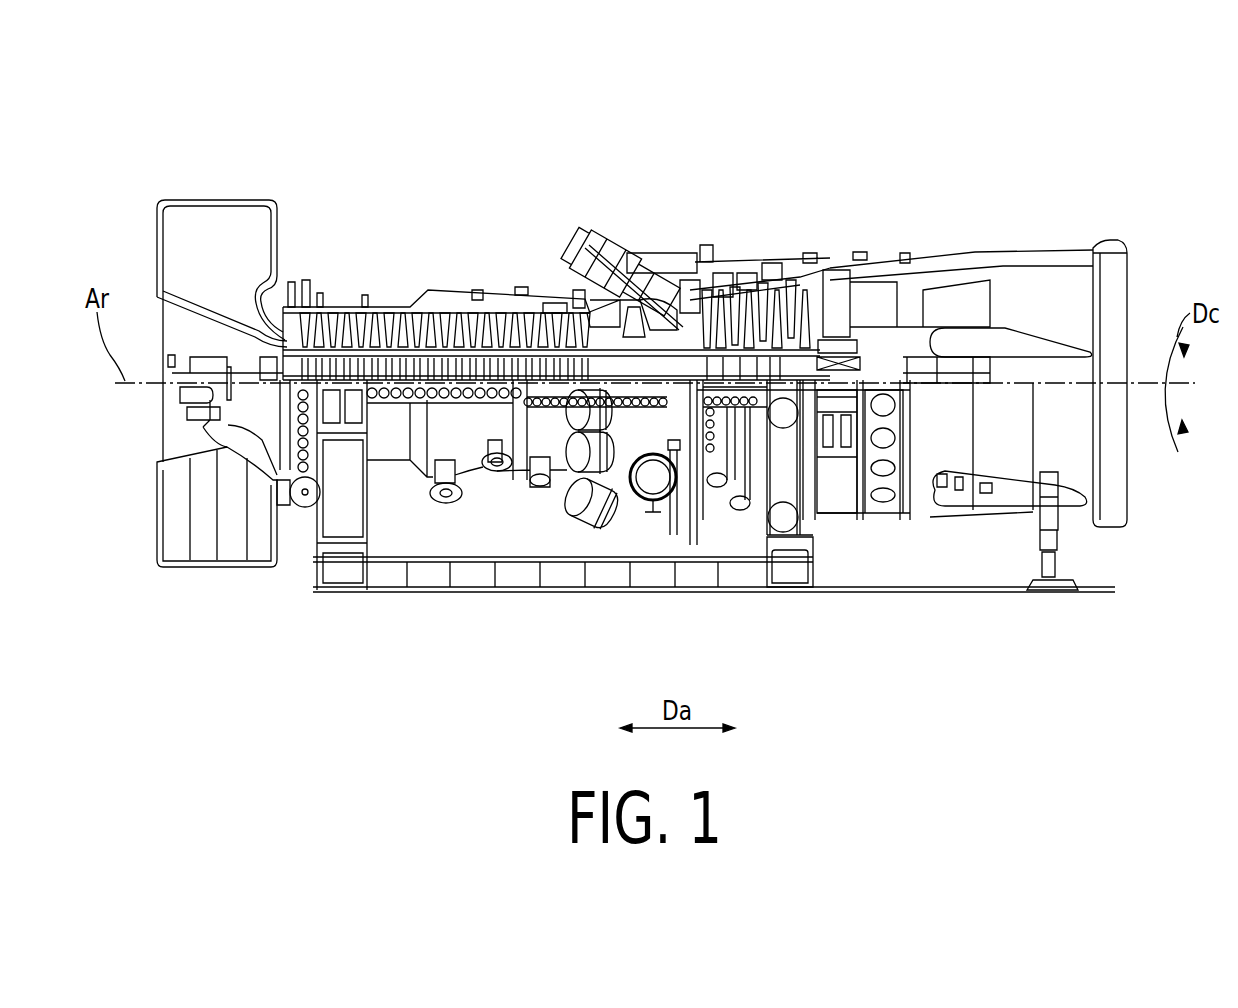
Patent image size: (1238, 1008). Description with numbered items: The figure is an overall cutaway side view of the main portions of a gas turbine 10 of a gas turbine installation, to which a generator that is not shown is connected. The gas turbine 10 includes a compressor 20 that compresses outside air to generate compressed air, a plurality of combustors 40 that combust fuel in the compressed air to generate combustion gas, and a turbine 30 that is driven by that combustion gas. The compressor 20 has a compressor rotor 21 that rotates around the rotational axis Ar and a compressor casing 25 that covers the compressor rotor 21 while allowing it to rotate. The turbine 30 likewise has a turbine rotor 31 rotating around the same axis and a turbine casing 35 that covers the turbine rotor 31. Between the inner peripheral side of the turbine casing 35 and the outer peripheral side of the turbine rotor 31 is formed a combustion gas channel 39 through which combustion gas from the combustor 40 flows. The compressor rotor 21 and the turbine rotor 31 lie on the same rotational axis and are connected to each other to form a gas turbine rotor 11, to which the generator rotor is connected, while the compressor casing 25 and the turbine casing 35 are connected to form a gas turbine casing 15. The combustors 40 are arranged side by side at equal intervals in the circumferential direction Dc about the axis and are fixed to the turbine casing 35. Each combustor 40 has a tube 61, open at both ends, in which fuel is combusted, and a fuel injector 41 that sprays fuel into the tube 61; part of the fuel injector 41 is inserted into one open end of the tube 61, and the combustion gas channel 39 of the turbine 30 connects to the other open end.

The gas turbine 10 is at (1005, 184).
The compressor 20 is at (436, 252).
The compressor casing 25 is at (388, 300).
The compressor rotor 21 is at (404, 275).
The gas turbine casing 15 is at (522, 297).
The combustor 40 is at (601, 392).
The fuel injector 41 is at (578, 248).
The tube 61 is at (643, 255).
The combustion gas channel 39 is at (695, 285).
The turbine 30 is at (750, 254).
The turbine casing 35 is at (742, 262).
The turbine rotor 31 is at (787, 367).
The gas turbine rotor 11 is at (556, 380).